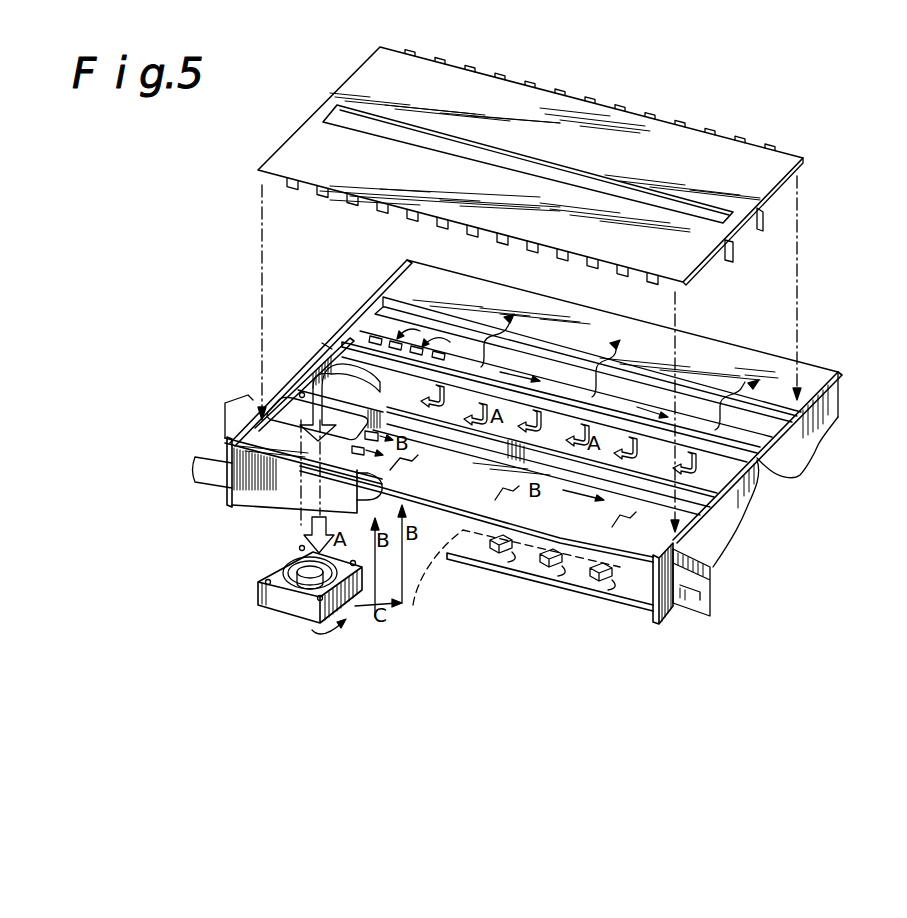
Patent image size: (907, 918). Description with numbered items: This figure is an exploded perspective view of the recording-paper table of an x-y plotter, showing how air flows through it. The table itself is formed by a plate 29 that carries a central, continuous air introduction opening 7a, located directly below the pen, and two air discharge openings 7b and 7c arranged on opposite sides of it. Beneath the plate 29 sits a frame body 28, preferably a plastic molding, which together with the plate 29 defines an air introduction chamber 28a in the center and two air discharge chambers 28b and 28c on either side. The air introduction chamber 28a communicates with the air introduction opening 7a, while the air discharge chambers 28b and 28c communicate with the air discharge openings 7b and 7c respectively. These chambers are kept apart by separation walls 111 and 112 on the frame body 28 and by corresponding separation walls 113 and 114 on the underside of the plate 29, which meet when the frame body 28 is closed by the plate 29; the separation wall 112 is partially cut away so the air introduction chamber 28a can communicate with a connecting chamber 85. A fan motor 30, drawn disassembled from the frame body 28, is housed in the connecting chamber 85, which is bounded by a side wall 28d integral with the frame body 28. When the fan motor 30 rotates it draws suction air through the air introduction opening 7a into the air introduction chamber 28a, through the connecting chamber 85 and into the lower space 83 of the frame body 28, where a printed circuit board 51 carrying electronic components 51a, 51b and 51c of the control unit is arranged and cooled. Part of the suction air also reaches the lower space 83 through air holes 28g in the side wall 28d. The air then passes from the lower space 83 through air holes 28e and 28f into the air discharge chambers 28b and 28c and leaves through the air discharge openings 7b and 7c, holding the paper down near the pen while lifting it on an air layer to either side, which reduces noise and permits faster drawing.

The air introduction opening 7a is at (563, 175).
The air discharge opening 7b is at (497, 240).
The air discharge opening 7c is at (643, 114).
The plate 29 is at (780, 171).
The separation wall 113 is at (763, 231).
The separation wall 114 is at (732, 262).
The frame body 28 is at (832, 355).
The air introduction chamber 28a is at (755, 473).
The air discharge chamber 28b is at (750, 513).
The air discharge chamber 28c is at (758, 457).
The side wall 28d is at (290, 488).
The air hole 28e is at (327, 347).
The air hole 28f is at (375, 335).
The air holes 28g is at (226, 437).
The separation wall 111 is at (693, 440).
The separation wall 112 is at (712, 582).
The connecting chamber 85 is at (271, 399).
The fan motor 30 is at (258, 597).
The lower space 83 is at (430, 518).
The printed circuit board 51 is at (530, 568).
The electronic component 51a is at (492, 550).
The electronic component 51b is at (547, 570).
The electronic component 51c is at (598, 583).